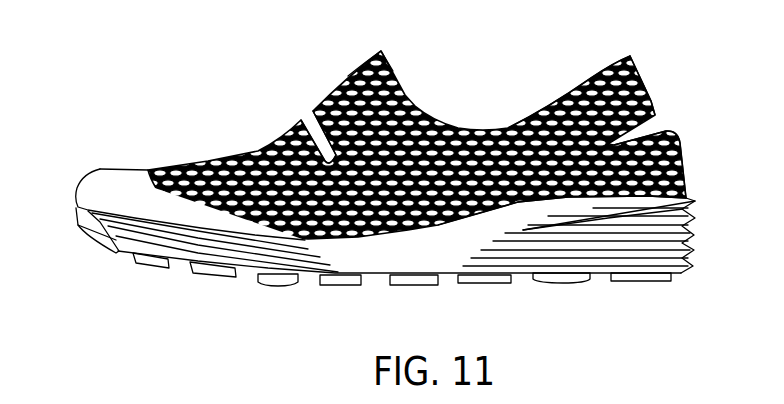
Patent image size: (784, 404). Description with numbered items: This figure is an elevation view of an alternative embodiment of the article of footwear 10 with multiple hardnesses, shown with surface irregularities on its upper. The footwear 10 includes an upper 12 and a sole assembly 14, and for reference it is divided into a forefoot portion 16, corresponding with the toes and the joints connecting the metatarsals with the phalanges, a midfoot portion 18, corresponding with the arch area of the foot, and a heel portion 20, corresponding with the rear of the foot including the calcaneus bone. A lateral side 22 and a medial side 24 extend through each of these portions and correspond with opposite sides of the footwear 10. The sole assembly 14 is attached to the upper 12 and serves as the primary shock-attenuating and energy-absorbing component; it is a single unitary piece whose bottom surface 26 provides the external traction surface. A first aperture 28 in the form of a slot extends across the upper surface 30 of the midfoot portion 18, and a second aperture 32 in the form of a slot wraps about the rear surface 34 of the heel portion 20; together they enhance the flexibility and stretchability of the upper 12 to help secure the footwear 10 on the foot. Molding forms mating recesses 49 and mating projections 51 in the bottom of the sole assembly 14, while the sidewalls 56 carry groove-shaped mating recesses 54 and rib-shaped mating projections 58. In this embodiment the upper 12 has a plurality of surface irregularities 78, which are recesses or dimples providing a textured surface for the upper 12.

The article of footwear 10 is at (372, 138).
The upper 12 is at (392, 138).
The sole assembly 14 is at (387, 265).
The forefoot portion 16 is at (169, 184).
The midfoot portion 18 is at (358, 187).
The heel portion 20 is at (591, 182).
The lateral side 22 is at (522, 84).
The medial side 24 is at (512, 191).
The bottom surface 26 is at (637, 276).
The first aperture 28 is at (297, 122).
The upper surface 30 is at (349, 68).
The second aperture 32 is at (650, 128).
The rear surface 34 is at (641, 80).
The mating recesses 49 is at (437, 268).
The mating projections 51 is at (264, 279).
The mating recesses 54 is at (684, 205).
The sidewalls 56 is at (363, 248).
The mating projections 58 is at (686, 242).
The surface irregularities 78 is at (210, 158).